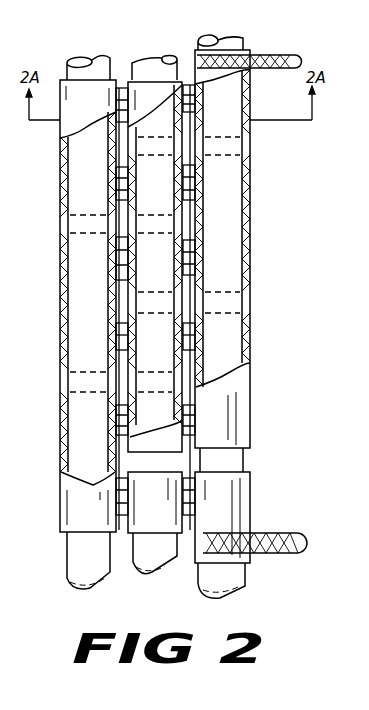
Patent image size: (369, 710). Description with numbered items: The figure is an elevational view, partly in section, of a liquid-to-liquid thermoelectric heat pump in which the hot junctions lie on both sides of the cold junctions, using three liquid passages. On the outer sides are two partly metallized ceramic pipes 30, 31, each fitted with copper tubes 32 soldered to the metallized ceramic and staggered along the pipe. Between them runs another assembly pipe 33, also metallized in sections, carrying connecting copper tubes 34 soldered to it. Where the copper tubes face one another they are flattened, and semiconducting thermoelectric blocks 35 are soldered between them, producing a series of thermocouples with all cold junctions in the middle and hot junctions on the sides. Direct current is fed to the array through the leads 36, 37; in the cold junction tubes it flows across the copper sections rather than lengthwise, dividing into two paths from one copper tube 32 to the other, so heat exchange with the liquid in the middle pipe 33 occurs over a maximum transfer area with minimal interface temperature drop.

The partly metallized ceramic pipe 30 is at (88, 72).
The partly metallized ceramic pipe 31 is at (220, 50).
The copper tube 32 is at (62, 162).
The assembly pipe 33 is at (146, 68).
The connecting copper tube 34 is at (180, 192).
The semiconducting thermoelectric block 35 is at (123, 105).
The lead 36 is at (279, 538).
The lead 37 is at (262, 62).